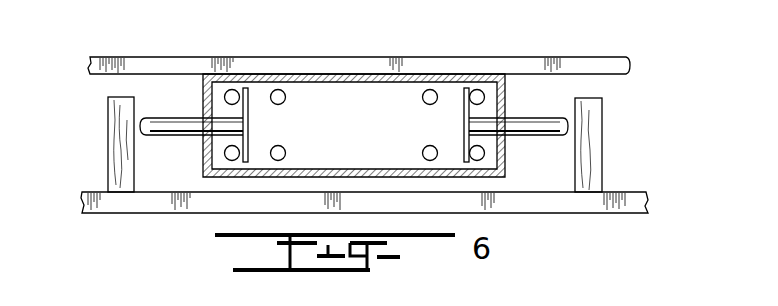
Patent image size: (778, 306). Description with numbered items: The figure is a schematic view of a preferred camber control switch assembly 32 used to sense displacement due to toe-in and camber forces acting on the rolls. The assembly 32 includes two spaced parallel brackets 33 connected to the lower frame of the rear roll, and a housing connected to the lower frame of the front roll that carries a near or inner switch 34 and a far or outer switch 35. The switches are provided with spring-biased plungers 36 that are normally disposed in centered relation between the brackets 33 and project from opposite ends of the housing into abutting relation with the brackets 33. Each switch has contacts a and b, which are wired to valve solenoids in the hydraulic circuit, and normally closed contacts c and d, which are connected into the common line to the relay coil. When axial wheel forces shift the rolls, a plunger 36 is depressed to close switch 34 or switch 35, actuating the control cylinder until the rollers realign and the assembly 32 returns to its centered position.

The camber control switch assembly 32 is at (609, 148).
The brackets 33 is at (108, 118).
The inner switch 34 is at (476, 111).
The outer switch 35 is at (508, 153).
The spring-biased plungers 36 is at (180, 135).